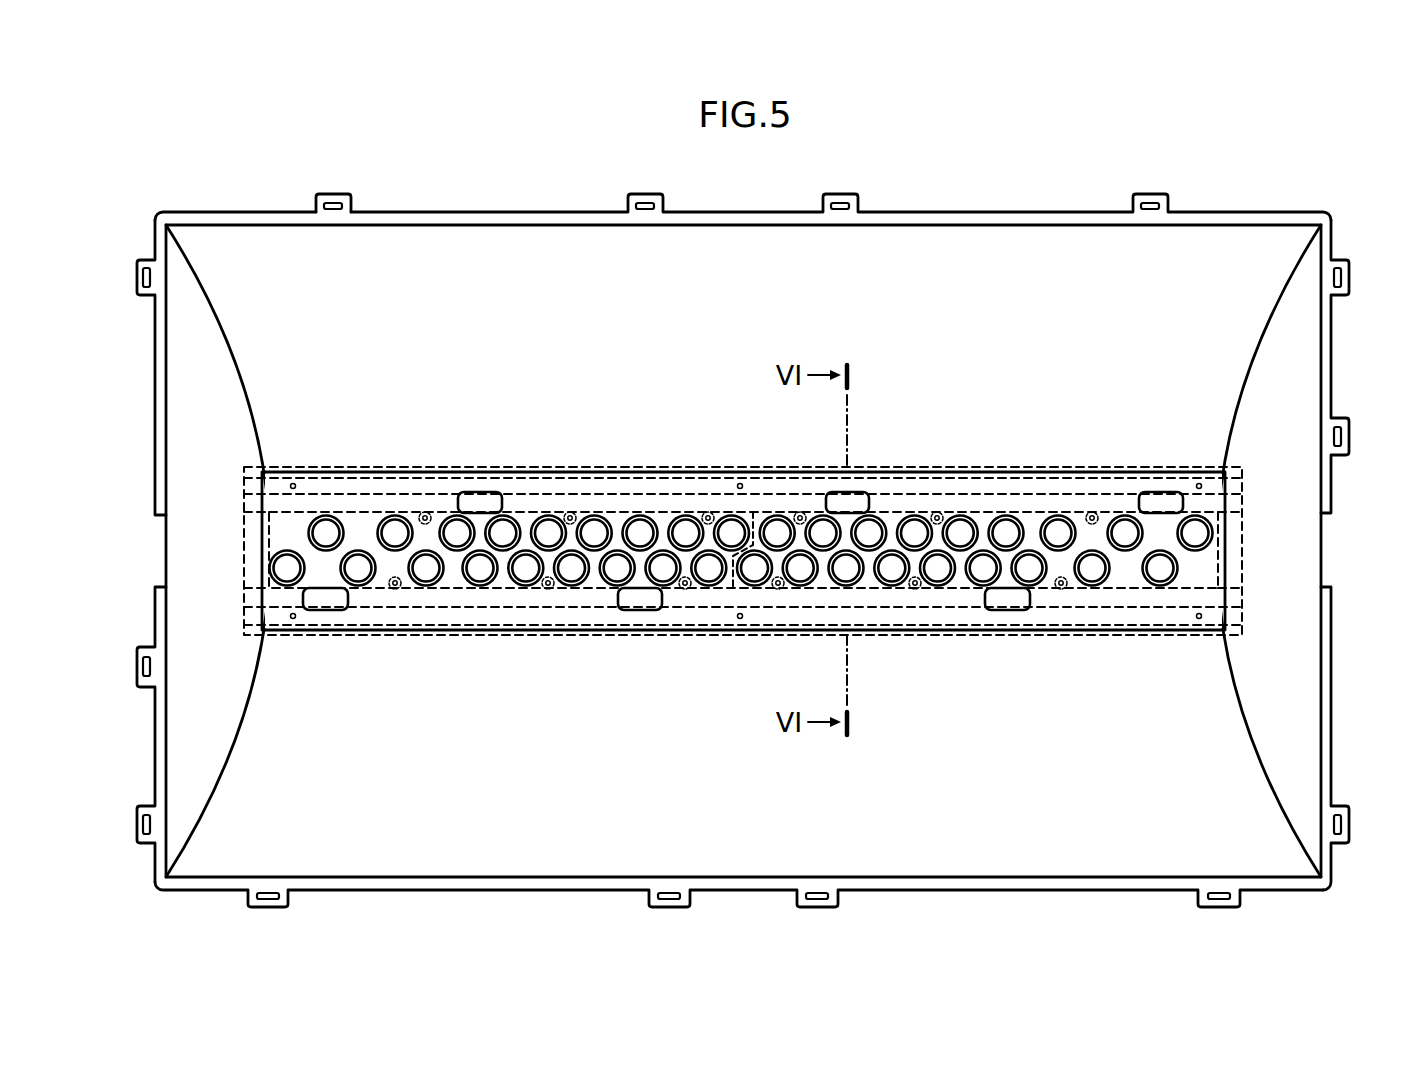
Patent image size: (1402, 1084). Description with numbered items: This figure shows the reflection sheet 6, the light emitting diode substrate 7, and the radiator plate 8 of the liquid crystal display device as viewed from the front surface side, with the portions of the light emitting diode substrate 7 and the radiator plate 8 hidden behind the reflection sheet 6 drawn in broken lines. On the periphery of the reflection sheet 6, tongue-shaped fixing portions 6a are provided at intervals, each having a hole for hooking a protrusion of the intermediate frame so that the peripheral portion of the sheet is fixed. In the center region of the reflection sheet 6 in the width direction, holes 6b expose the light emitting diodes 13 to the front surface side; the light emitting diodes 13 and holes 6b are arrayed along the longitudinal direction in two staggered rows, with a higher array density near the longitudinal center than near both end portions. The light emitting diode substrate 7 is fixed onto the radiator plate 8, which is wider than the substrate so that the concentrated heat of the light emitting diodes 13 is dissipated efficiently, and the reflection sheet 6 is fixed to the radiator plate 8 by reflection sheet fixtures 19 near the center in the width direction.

The reflection sheet 6 is at (1045, 212).
The fixing portion 6a is at (332, 194).
The hole 6b is at (281, 552).
The light emitting diode substrate 7 is at (1225, 558).
The radiator plate 8 is at (1242, 497).
The light emitting diode 13 is at (271, 567).
The reflection sheet fixture 19 is at (488, 492).